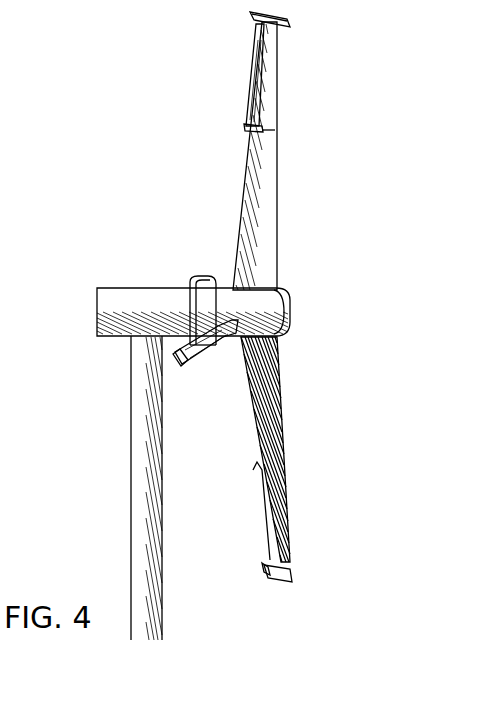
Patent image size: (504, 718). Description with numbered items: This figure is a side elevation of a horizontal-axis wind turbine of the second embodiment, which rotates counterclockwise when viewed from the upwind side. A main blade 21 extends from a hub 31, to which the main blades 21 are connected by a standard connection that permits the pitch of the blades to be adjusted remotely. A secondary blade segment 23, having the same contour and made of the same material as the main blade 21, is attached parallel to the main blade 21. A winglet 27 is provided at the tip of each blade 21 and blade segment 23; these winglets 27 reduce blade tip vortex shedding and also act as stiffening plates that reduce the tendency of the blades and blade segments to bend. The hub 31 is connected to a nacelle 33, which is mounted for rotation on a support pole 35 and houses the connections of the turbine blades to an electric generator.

The main blade 21 is at (270, 195).
The secondary blade segment 23 is at (254, 79).
The winglet 27 is at (287, 27).
The hub 31 is at (226, 290).
The nacelle 33 is at (146, 296).
The support pole 35 is at (140, 418).